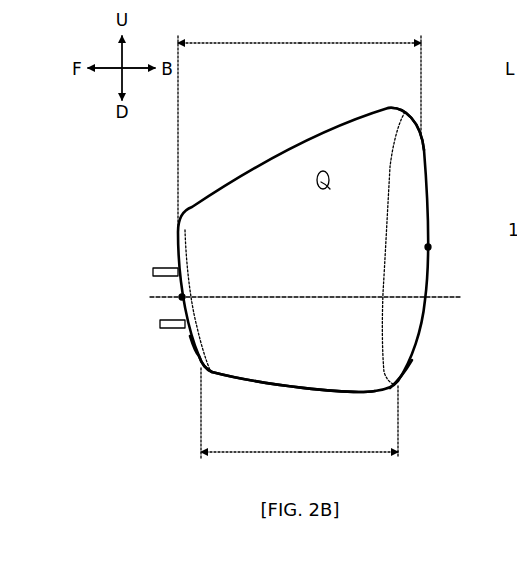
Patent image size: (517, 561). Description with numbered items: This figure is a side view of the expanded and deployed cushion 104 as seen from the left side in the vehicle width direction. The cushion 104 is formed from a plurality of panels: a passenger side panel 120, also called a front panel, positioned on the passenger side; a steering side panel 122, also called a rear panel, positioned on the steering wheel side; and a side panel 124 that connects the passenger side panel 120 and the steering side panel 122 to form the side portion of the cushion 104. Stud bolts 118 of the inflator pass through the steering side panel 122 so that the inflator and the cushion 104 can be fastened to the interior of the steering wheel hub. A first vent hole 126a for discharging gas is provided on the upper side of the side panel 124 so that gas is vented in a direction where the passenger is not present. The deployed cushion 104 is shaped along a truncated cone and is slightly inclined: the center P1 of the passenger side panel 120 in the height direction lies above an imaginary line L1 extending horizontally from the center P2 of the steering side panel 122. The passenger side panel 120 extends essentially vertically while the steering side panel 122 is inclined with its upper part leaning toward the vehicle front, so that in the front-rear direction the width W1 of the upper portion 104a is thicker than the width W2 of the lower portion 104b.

The cushion 104 is at (297, 148).
The upper portion 104a is at (424, 140).
The lower portion 104b is at (402, 377).
The stud bolts 118 is at (163, 268).
The passenger side panel 120 is at (402, 337).
The steering side panel 122 is at (195, 355).
The side panel 124 is at (282, 380).
The first vent hole 126a is at (330, 190).
The center of the passenger side panel P1 is at (442, 249).
The center of the steering side panel P2 is at (180, 297).
The imaginary line L1 is at (317, 299).
The width of the upper portion W1 is at (299, 124).
The width of the lower portion W2 is at (299, 413).